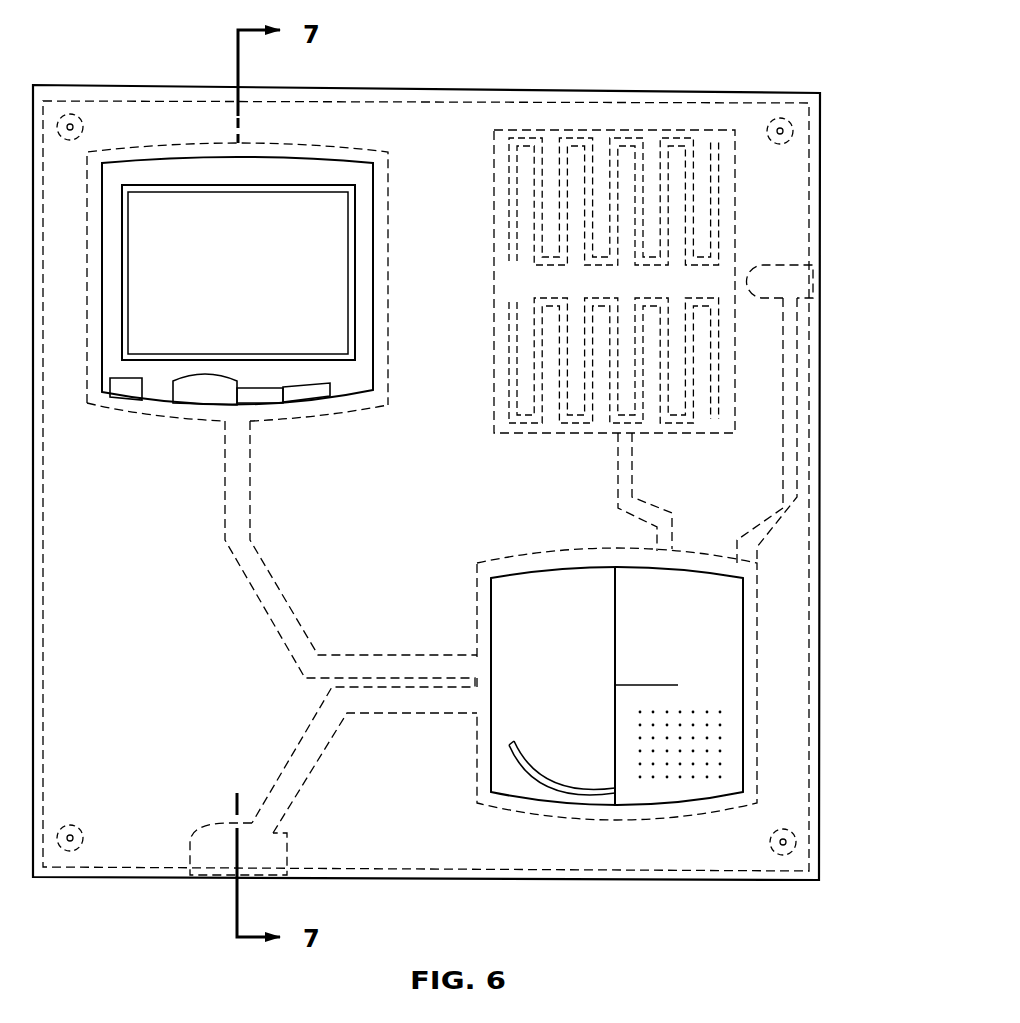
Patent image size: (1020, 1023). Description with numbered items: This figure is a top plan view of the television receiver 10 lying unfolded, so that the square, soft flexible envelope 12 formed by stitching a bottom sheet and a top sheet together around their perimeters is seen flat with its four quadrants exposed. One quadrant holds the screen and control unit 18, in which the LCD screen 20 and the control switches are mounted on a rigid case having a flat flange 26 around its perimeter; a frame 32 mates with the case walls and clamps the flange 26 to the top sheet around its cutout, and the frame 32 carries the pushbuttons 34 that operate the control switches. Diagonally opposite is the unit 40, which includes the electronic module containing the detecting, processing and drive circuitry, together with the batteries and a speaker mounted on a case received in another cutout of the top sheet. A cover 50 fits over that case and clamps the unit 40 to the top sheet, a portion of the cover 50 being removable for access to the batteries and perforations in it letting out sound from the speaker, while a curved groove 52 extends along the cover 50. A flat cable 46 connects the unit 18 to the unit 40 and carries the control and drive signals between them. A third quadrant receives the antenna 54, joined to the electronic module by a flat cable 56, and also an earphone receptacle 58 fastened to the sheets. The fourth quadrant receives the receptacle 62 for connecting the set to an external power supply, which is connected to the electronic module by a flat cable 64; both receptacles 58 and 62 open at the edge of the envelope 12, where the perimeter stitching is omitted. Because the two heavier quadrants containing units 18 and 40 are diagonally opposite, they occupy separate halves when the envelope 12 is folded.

The television receiver 10 is at (817, 82).
The envelope 12 is at (821, 765).
The screen and control unit 18 is at (277, 255).
The LCD screen 20 is at (222, 290).
The flange 26 is at (392, 160).
The frame 32 is at (373, 233).
The pushbuttons 34 is at (202, 397).
The unit 40 is at (686, 684).
The flat cable 46 is at (288, 597).
The cover 50 is at (744, 668).
The curved groove 52 is at (537, 763).
The antenna 54 is at (582, 130).
The flat cable 56 is at (617, 483).
The receptacle 58 is at (816, 396).
The receptacle 62 is at (190, 853).
The flat cable 64 is at (308, 778).